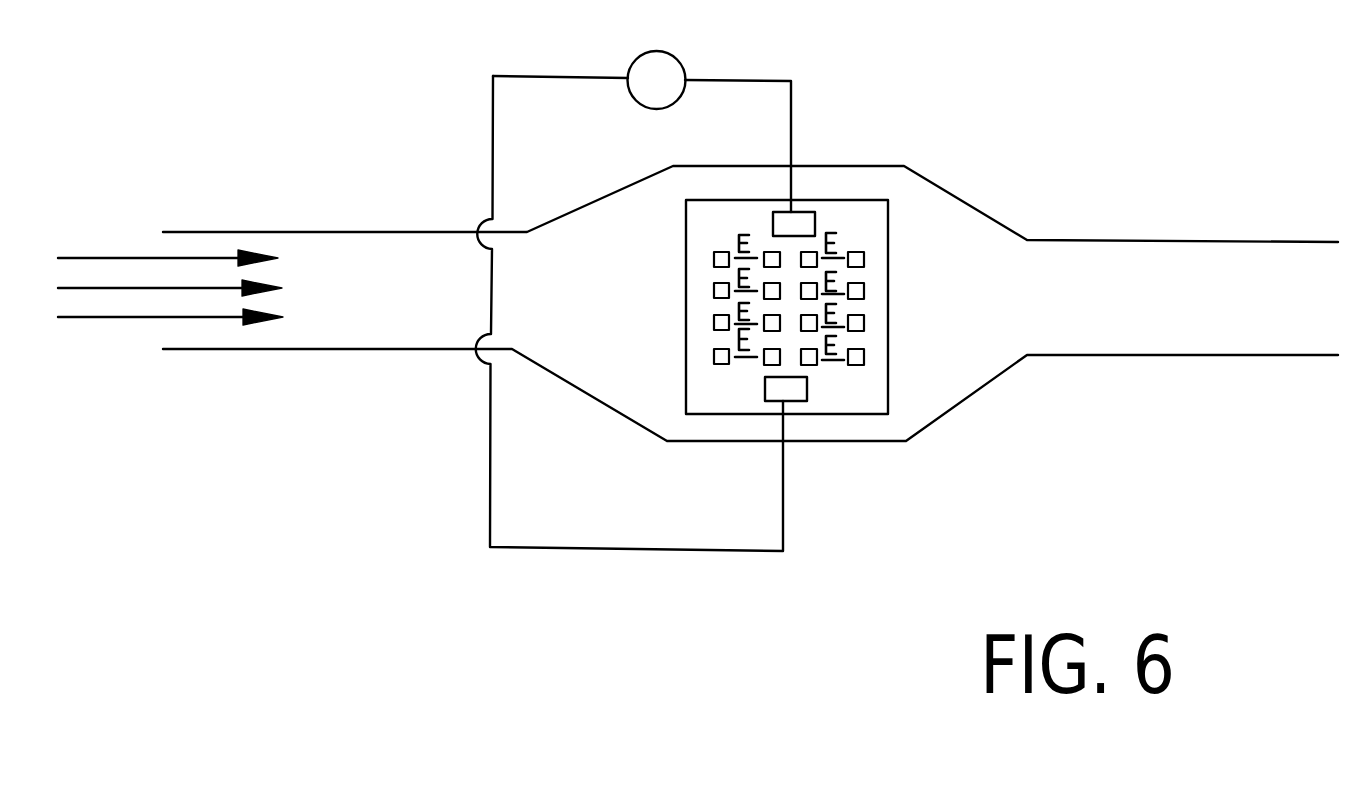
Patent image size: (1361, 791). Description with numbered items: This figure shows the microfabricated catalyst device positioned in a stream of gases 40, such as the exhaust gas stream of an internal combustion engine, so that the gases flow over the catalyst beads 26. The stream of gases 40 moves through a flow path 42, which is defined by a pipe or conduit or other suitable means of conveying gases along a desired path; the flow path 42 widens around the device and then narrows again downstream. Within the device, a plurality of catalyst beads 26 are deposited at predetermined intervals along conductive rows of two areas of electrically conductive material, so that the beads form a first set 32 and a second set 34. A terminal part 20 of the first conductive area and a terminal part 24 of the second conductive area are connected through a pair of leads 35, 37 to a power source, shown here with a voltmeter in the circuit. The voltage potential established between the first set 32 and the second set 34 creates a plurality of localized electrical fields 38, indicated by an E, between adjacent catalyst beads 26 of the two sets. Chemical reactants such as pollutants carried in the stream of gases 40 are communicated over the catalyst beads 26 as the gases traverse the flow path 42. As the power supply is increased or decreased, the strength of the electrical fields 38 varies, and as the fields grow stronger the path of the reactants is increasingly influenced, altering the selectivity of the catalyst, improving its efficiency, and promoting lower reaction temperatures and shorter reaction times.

The terminal part 20 is at (793, 226).
The terminal part 24 is at (790, 390).
The catalyst beads 26 is at (865, 260).
The first set of beads 32 is at (717, 365).
The second set of beads 34 is at (767, 365).
The lead 35 is at (627, 550).
The lead 37 is at (792, 115).
The localized electrical fields 38 is at (743, 232).
The stream of gases 40 is at (112, 258).
The flow path 42 is at (397, 349).